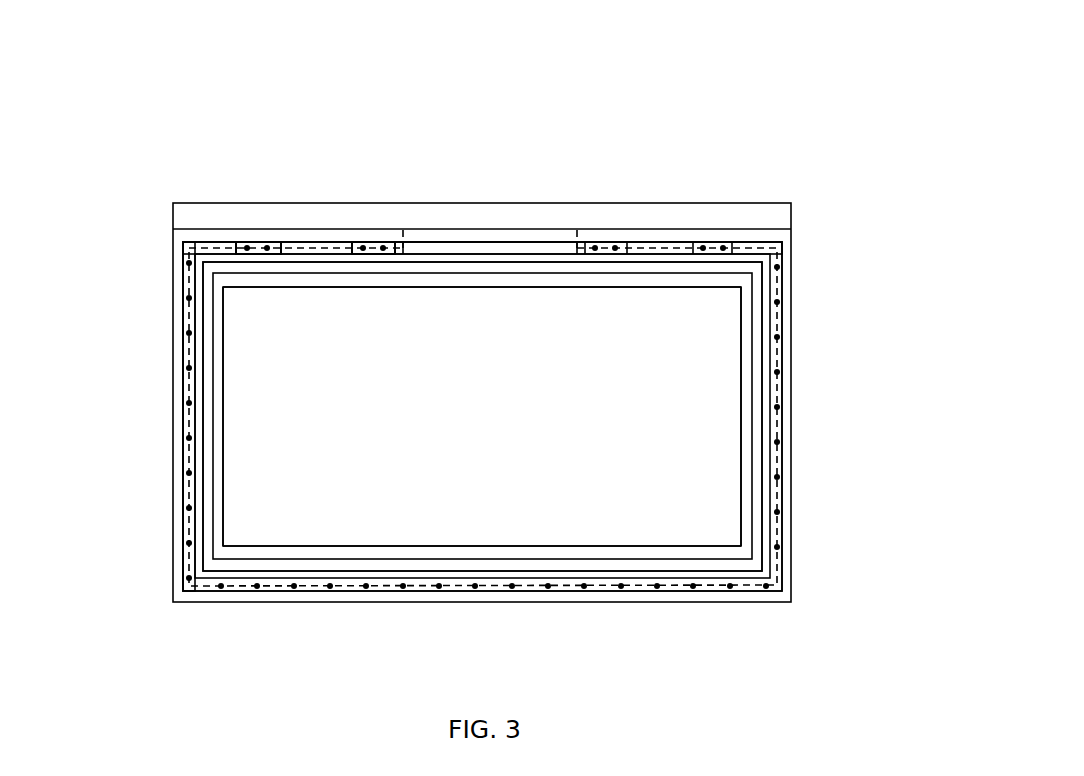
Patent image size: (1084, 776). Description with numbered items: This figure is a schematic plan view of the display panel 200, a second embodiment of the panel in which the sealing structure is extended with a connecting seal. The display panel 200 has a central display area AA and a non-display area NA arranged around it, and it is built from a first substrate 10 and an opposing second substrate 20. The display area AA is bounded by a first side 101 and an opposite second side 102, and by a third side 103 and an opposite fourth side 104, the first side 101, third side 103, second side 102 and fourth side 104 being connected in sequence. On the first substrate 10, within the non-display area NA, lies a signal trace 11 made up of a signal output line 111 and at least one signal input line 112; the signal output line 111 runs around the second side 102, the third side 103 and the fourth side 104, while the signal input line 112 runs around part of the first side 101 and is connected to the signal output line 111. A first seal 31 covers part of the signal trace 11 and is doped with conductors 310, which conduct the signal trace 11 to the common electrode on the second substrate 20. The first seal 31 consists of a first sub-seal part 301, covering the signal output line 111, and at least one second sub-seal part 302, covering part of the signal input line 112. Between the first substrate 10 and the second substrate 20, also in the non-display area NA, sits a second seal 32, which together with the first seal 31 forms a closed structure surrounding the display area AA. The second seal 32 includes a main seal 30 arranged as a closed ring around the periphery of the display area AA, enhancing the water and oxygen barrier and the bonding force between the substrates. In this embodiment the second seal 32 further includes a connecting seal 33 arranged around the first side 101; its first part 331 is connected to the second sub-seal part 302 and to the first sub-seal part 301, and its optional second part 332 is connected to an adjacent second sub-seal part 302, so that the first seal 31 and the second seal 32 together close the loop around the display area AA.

The display panel 200 is at (175, 117).
The first substrate 10 is at (513, 218).
The second substrate 20 is at (558, 237).
The non-display area NA is at (630, 218).
The display area AA is at (482, 416).
The first side 101 is at (465, 287).
The second side 102 is at (317, 547).
The third side 103 is at (223, 387).
The fourth side 104 is at (753, 457).
The signal trace 11 is at (105, 222).
The signal output line 111 is at (188, 278).
The signal input line 112 is at (210, 248).
The main seal 30 is at (427, 268).
The first seal 31 is at (895, 193).
The first sub-seal part 301 is at (777, 248).
The second sub-seal part 302 is at (713, 243).
The conductors 310 is at (777, 337).
The second seal 32 is at (380, 88).
The connecting seal 33 is at (308, 140).
The first part 331 is at (230, 247).
The second part 332 is at (290, 247).